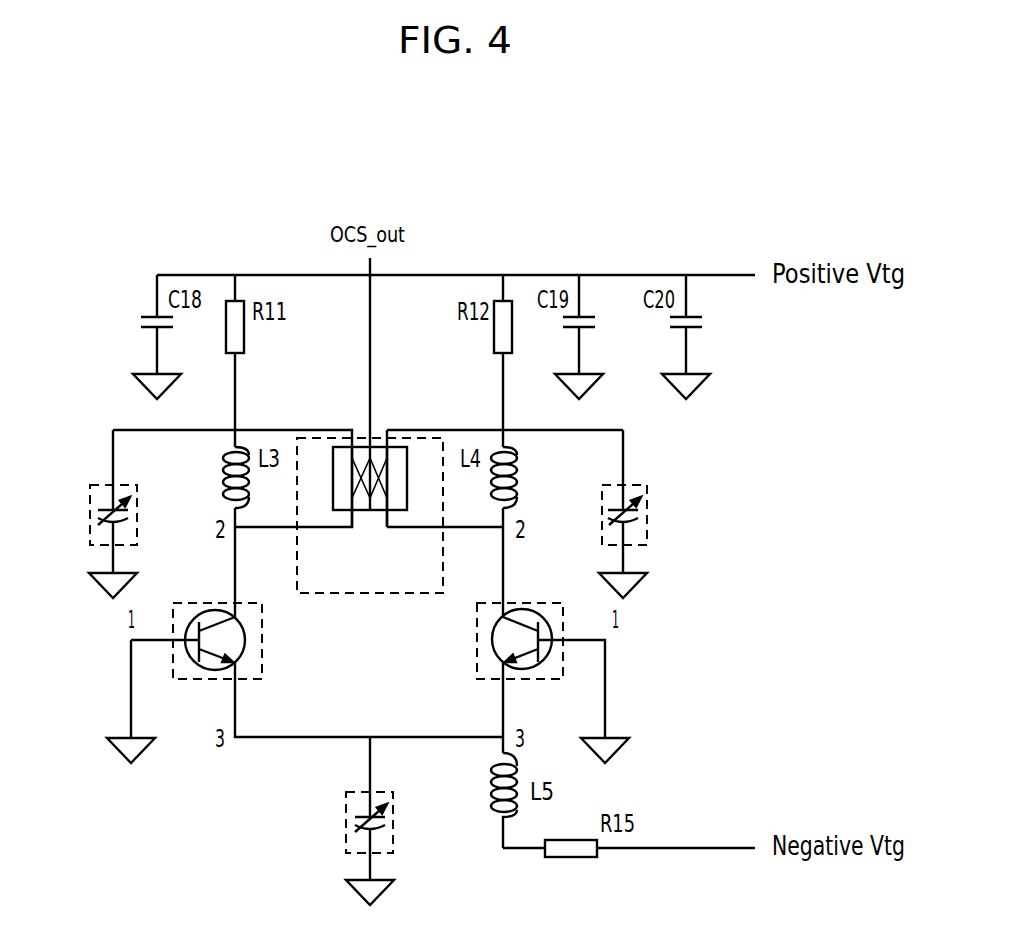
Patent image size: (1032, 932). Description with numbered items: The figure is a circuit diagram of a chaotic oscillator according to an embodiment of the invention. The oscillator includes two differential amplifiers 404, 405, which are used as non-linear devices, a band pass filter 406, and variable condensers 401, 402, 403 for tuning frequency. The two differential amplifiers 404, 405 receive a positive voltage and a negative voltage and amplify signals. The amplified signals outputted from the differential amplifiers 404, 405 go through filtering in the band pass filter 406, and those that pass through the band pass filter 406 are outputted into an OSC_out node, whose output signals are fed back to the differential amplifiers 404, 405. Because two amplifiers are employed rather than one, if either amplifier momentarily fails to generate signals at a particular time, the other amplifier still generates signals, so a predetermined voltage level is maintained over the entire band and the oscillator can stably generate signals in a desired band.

The variable condenser 401 is at (90, 515).
The variable condenser 402 is at (395, 836).
The variable condenser 403 is at (650, 515).
The differential amplifier 404 is at (262, 655).
The differential amplifier 405 is at (477, 655).
The band pass filter 406 is at (368, 594).